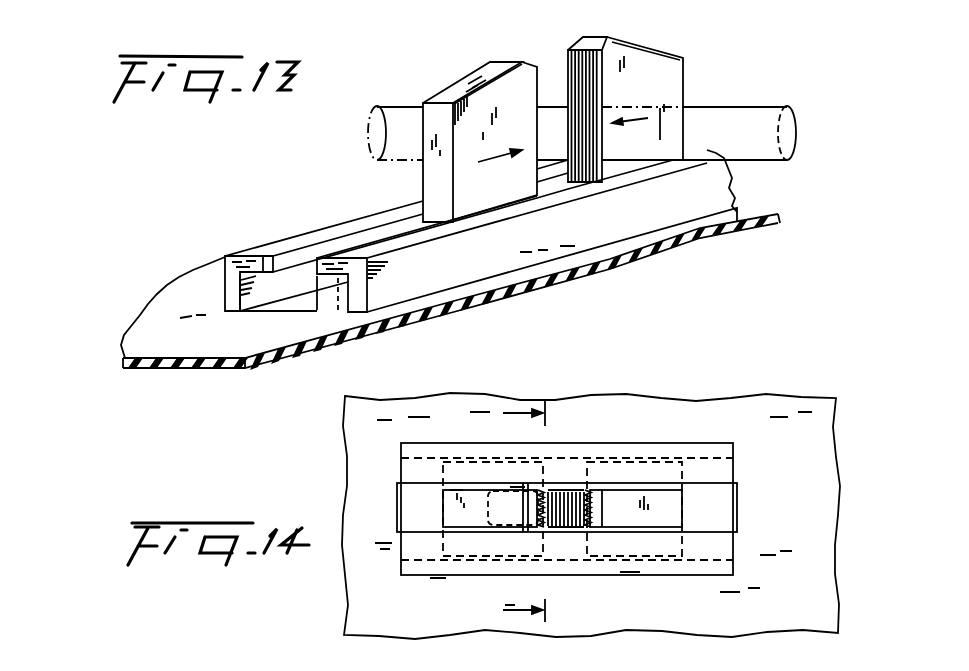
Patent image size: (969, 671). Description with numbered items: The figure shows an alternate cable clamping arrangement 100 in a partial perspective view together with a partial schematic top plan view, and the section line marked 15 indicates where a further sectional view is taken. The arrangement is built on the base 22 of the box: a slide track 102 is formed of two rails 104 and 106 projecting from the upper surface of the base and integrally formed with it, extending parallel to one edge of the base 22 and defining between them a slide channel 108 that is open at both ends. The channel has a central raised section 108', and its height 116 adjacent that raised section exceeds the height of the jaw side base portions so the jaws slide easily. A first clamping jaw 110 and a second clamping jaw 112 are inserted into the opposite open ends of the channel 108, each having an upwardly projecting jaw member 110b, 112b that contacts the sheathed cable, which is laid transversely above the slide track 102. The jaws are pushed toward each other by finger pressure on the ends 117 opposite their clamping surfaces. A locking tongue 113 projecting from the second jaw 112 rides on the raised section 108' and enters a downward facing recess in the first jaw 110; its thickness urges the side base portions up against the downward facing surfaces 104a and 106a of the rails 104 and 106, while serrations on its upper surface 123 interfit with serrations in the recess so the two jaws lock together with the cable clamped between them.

In FIG. 13, the base 22 is at (172, 356).
In FIG. 13, the cable clamping arrangement 100 is at (573, 298).
In FIG. 14, the cable clamping arrangement 100 is at (684, 430).
In FIG. 13, the slide track 102 is at (216, 222).
In FIG. 13, the rail 104 is at (234, 266).
In FIG. 13, the downward facing surface 104a is at (264, 272).
In FIG. 13, the rail 106 is at (368, 287).
In FIG. 13, the downward facing surface 106a is at (314, 276).
In FIG. 13, the slide channel 108 is at (235, 311).
In FIG. 13, the central raised section 108' is at (288, 311).
In FIG. 13, the first clamping jaw 110 is at (464, 55).
In FIG. 14, the first clamping jaw 110 is at (472, 562).
In FIG. 13, the jaw member 110b is at (528, 78).
In FIG. 13, the second clamping jaw 112 is at (714, 53).
In FIG. 14, the second clamping jaw 112 is at (697, 472).
In FIG. 13, the jaw member 112b is at (659, 60).
In FIG. 14, the locking tongue 113 is at (594, 531).
In FIG. 13, the height of slide channel 116 is at (334, 300).
In FIG. 13, the end of jaw 117 is at (433, 116).
In FIG. 14, the upper surface of locking tongue 123 is at (566, 496).
In FIG. 14, the section line 15- 15 is at (535, 515).